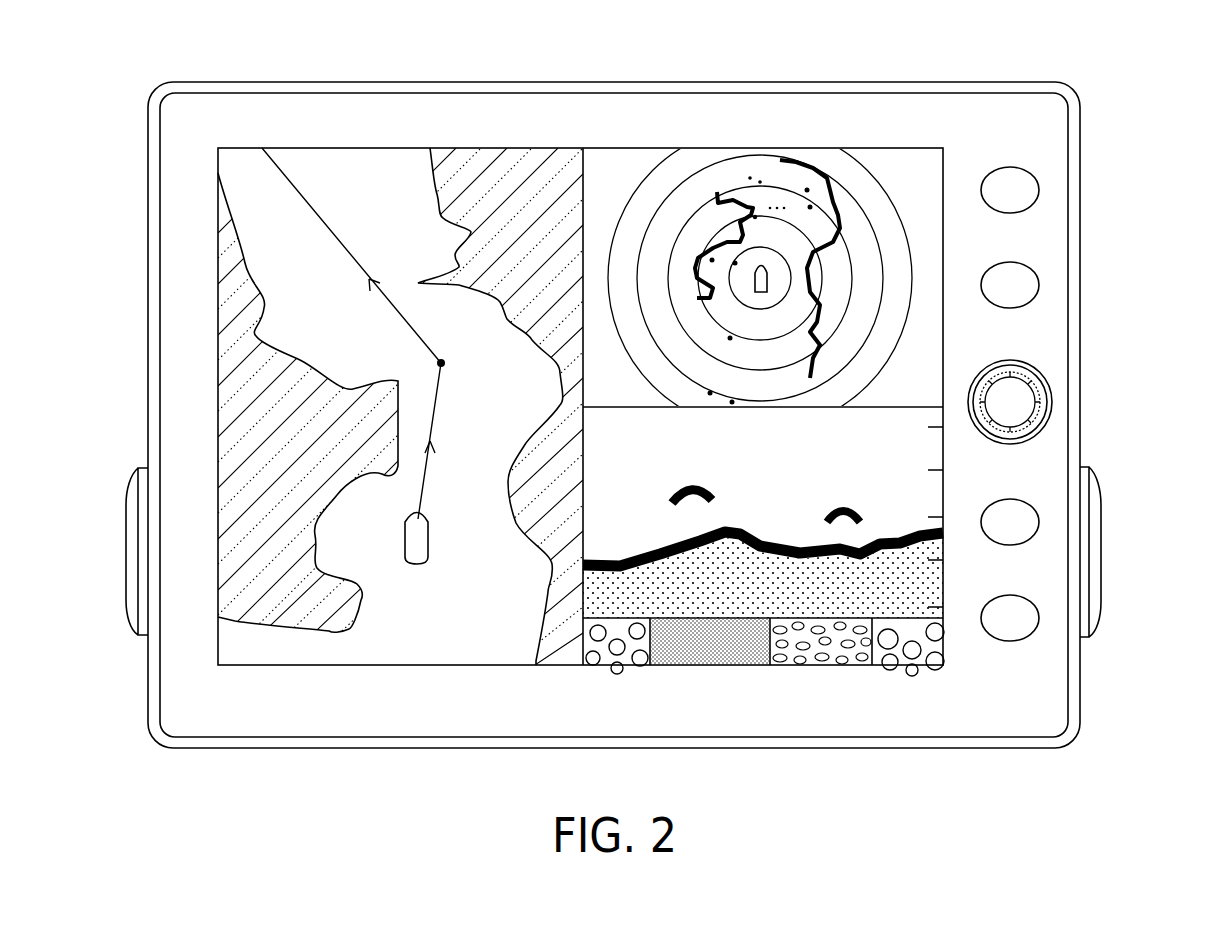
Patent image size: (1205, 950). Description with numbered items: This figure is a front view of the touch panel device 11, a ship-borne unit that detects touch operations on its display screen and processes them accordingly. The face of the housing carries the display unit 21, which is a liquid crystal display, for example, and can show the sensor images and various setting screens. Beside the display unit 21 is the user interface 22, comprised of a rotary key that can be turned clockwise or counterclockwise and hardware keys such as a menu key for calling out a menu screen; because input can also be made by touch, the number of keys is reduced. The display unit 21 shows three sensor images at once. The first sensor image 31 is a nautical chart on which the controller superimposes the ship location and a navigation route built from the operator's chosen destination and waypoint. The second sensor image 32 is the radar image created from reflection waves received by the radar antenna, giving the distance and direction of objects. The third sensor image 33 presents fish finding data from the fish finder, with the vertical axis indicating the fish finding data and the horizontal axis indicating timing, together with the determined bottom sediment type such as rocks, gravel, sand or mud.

The touch panel device 11 is at (1158, 115).
The display unit 21 is at (955, 148).
The user interface 22 is at (1056, 371).
The first sensor image 31 is at (217, 182).
The second sensor image 32 is at (938, 252).
The third sensor image 33 is at (940, 597).